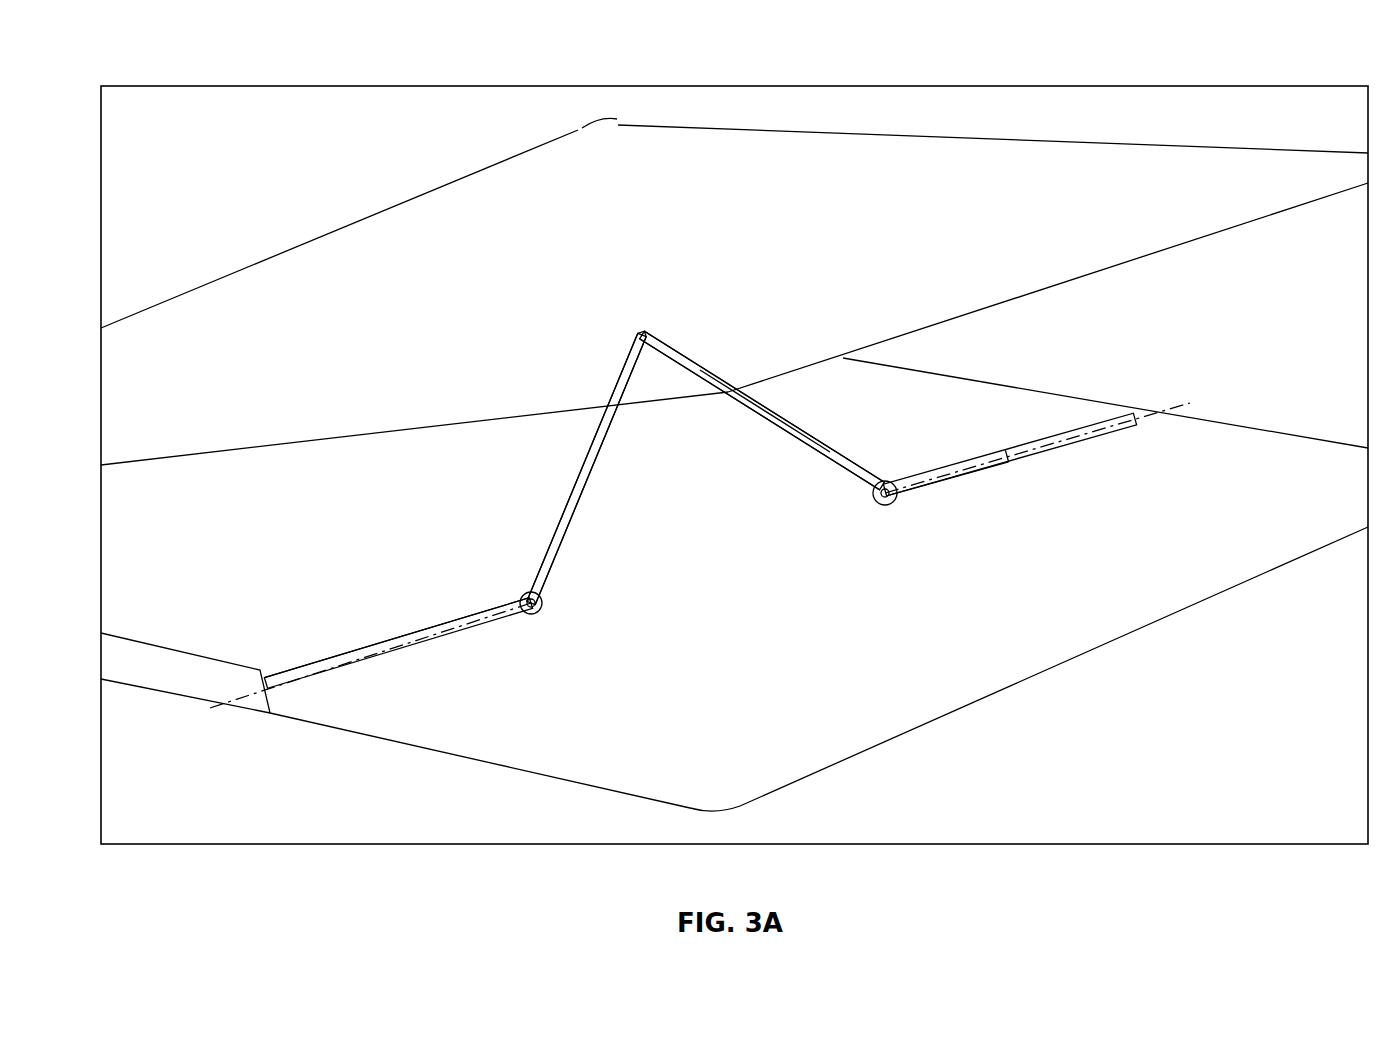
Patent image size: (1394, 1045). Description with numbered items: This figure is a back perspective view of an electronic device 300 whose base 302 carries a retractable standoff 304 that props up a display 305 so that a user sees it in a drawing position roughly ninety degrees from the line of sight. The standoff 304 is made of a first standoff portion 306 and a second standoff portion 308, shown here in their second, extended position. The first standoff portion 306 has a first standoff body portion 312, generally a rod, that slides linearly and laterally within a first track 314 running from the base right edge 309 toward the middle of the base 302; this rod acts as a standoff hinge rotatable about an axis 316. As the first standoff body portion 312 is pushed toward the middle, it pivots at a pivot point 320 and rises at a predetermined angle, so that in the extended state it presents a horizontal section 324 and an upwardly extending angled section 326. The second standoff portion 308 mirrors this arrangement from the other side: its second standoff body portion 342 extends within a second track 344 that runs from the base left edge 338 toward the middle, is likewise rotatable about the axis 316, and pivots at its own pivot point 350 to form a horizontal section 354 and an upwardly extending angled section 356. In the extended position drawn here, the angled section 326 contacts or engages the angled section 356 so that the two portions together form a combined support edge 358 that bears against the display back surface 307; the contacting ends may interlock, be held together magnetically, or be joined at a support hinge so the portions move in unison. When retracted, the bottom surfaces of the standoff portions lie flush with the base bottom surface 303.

The electronic device 300 is at (978, 50).
The base 302 is at (212, 687).
The base bottom surface 303 is at (335, 537).
The retractable standoff 304 is at (824, 412).
The display 305 is at (252, 290).
The first standoff portion 306 is at (556, 522).
The display back surface 307 is at (737, 233).
The second standoff portion 308 is at (838, 465).
The base right edge 309 is at (180, 672).
The first standoff body portion 312 is at (583, 478).
The first track 314 is at (338, 665).
The axis 316 is at (443, 633).
The pivot point 320 is at (528, 592).
The horizontal section 324 is at (490, 633).
The angled section 326 is at (598, 454).
The base left edge 338 is at (1146, 410).
The second standoff body portion 342 is at (772, 410).
The second track 344 is at (1078, 440).
The pivot point 350 is at (887, 506).
The horizontal section 354 is at (930, 480).
The angled section 356 is at (782, 432).
The combined support edge 358 is at (642, 334).